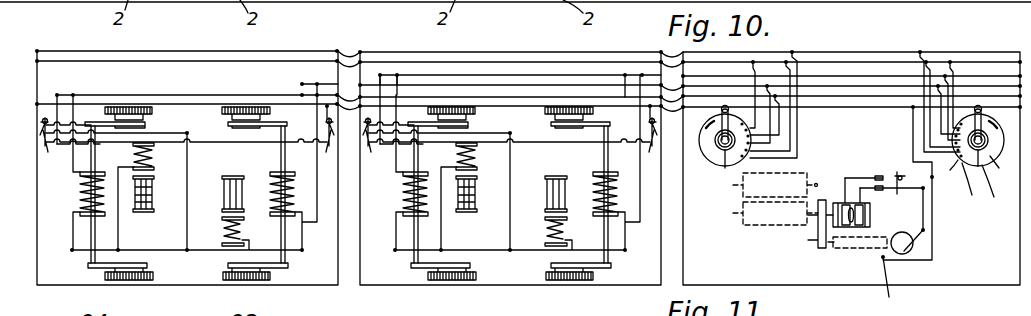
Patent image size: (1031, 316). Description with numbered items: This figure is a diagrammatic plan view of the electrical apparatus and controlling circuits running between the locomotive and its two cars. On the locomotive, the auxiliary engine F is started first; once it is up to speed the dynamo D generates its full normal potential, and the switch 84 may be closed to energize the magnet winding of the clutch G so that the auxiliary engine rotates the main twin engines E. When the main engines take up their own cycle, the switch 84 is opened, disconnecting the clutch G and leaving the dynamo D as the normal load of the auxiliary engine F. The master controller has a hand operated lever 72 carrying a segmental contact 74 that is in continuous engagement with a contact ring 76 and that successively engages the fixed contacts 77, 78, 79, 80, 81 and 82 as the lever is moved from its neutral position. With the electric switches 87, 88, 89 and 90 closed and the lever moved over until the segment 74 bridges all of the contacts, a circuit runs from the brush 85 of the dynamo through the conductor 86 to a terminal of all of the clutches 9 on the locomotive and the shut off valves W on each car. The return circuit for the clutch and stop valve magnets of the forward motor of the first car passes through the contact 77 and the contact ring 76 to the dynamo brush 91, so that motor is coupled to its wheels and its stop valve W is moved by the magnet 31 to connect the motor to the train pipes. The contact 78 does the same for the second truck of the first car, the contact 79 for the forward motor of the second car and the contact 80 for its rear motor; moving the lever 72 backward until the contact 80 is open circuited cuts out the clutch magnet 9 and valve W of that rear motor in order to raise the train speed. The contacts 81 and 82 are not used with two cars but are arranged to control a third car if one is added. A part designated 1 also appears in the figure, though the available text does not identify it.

The contactor 1 is at (437, 281).
The clutch 9 is at (80, 196).
The magnet 31 is at (475, 163).
The shut off valve W is at (153, 190).
The conductor 86 is at (98, 105).
The electric switch 87 is at (650, 150).
The electric switch 88 is at (371, 150).
The electric switch 89 is at (326, 150).
The electric switch 90 is at (48, 148).
The hand operated lever 72 is at (985, 140).
The segmental contact 74 is at (990, 126).
The contact ring 76 is at (1003, 172).
The fixed contact 77 is at (958, 126).
The fixed contact 78 is at (956, 133).
The fixed contact 79 is at (956, 143).
The fixed contact 80 is at (954, 174).
The fixed contact 81 is at (968, 189).
The fixed contact 82 is at (995, 190).
The switch 84 is at (900, 194).
The dynamo brush 85 is at (889, 286).
The dynamo brush 91 is at (928, 231).
The dynamo D is at (908, 251).
The main twin engine E is at (743, 190).
The auxiliary engine F is at (853, 249).
The clutch G is at (852, 227).